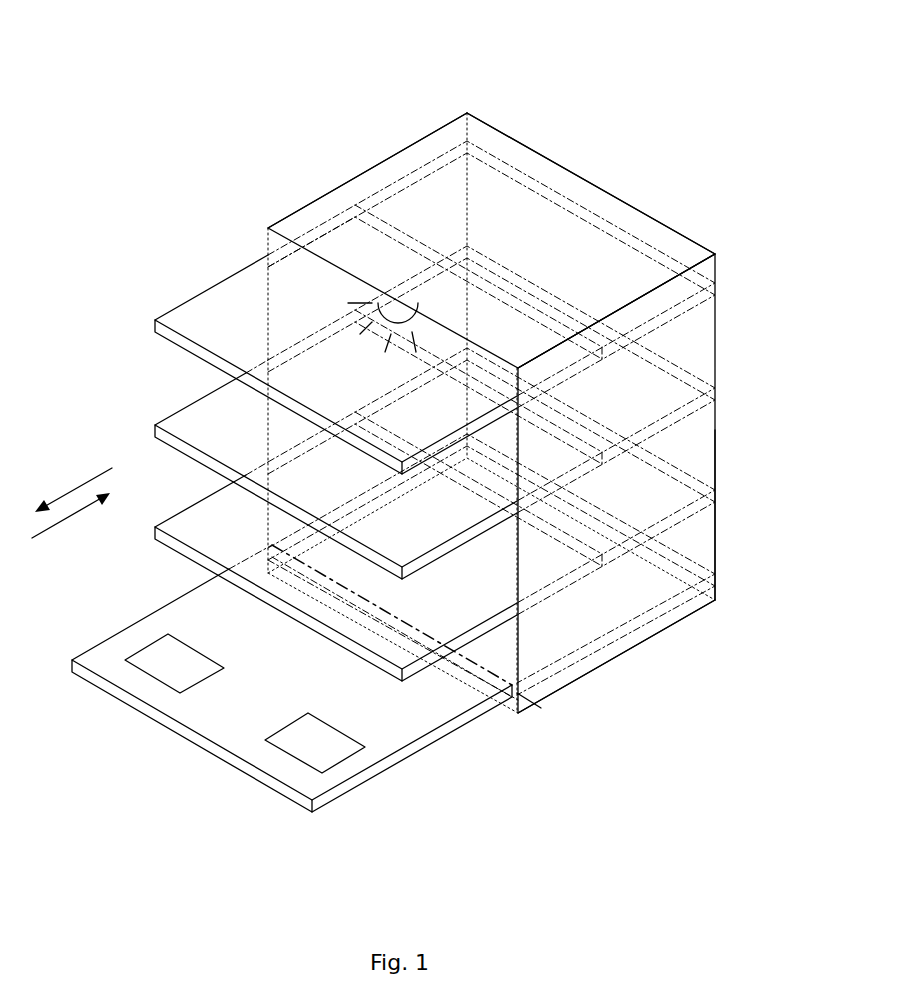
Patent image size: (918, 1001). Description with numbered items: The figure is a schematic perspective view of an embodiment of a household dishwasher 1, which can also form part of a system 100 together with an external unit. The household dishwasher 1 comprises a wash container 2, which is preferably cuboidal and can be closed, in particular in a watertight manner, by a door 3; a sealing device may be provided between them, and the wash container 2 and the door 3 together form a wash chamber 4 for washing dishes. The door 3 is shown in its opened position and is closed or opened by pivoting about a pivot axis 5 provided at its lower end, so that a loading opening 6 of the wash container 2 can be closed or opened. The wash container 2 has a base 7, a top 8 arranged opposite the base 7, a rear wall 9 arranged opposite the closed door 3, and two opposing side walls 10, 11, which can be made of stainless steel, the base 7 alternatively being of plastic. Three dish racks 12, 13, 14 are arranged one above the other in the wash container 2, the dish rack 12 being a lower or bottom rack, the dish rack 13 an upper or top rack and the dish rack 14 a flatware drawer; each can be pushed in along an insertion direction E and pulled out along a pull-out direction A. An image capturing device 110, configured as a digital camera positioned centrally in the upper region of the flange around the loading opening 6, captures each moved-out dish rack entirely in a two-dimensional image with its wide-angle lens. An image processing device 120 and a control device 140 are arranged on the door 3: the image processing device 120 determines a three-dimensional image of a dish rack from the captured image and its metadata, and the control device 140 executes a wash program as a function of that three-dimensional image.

The system 100 is at (170, 86).
The household dishwasher 1 is at (530, 446).
The wash container 2 is at (367, 170).
The door 3 is at (292, 710).
The wash chamber 4 is at (505, 467).
The pivot axis 5 is at (521, 705).
The loading opening 6 is at (497, 645).
The base 7 is at (647, 640).
The top 8 is at (515, 150).
The rear wall 9 is at (625, 215).
The side wall 10 is at (385, 185).
The side wall 11 is at (688, 368).
The dish rack 12 is at (183, 530).
The dish rack 13 is at (183, 430).
The dish rack 14 is at (215, 305).
The image capturing device 110 is at (398, 312).
The image processing device 120 is at (150, 677).
The control device 140 is at (290, 757).